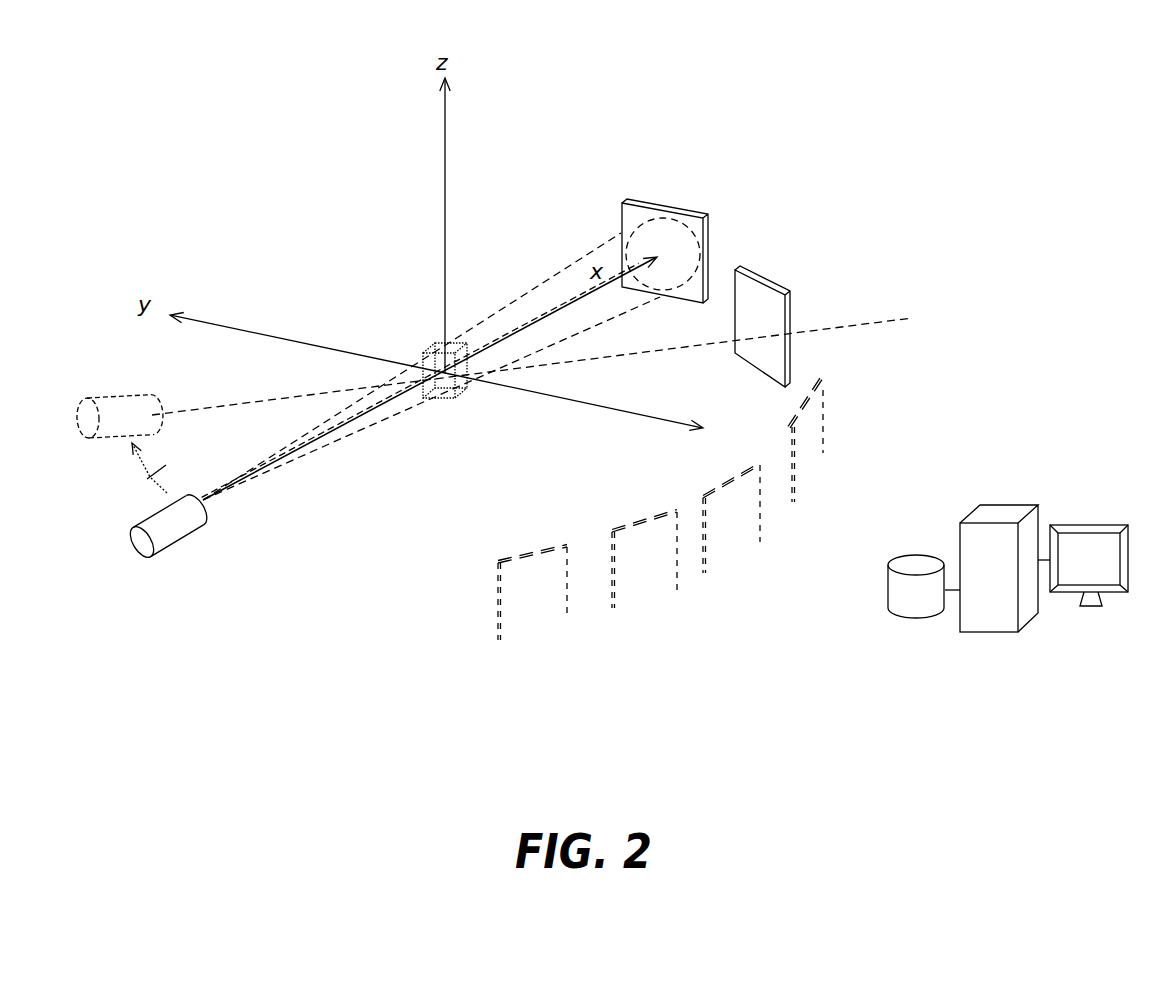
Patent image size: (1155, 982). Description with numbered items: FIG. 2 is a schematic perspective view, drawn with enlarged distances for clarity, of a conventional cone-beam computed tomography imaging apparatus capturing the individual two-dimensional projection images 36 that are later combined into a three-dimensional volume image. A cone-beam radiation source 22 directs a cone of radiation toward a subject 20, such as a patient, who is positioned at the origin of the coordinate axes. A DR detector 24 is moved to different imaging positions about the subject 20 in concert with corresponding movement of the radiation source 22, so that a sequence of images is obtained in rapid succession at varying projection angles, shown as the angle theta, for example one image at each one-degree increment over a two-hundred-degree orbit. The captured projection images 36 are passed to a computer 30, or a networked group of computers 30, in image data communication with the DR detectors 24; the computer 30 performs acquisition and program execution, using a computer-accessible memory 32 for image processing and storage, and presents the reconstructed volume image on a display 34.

The subject 20 is at (452, 380).
The cone-beam radiation source 22 is at (170, 552).
The DR detector 24 is at (677, 209).
The computer 30 is at (975, 597).
The computer-accessible memory 32 is at (902, 605).
The display 34 is at (1073, 572).
The 2-D projection images 36 is at (548, 620).